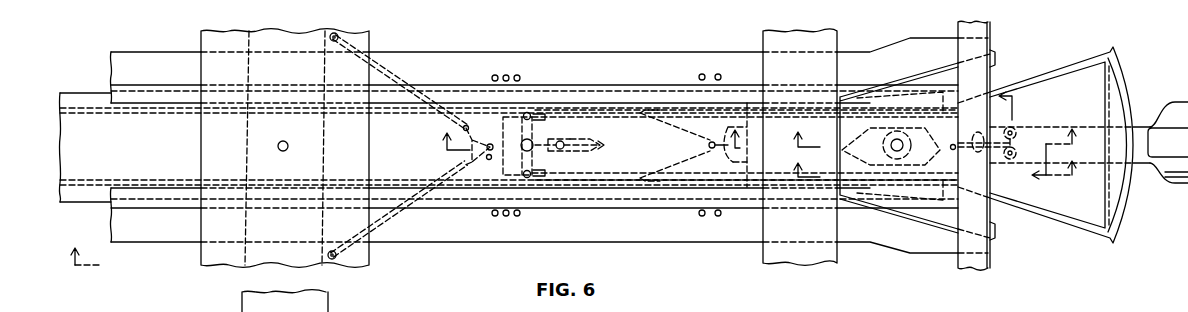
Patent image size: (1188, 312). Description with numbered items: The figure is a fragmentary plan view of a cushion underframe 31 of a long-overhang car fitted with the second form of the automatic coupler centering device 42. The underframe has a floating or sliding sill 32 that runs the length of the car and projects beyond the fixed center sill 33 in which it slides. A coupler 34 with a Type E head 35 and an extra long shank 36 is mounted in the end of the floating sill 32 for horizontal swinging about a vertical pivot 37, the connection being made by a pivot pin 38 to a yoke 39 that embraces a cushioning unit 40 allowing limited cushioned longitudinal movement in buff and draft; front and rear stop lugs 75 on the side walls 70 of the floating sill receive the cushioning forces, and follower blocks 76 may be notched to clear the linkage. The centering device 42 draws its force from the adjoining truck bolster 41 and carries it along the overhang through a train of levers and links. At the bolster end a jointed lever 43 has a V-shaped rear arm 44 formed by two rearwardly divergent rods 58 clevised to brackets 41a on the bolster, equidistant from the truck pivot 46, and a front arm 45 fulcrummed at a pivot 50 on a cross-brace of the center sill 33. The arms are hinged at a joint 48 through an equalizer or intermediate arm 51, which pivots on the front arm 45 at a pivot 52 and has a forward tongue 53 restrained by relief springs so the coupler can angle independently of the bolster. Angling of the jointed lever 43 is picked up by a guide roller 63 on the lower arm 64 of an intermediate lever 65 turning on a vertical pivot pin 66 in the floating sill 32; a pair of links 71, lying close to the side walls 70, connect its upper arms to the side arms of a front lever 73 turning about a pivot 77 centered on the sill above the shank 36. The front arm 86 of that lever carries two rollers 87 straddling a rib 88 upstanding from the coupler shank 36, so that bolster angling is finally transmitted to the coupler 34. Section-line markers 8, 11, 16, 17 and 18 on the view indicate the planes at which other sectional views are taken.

The section line 8 is at (78, 259).
The section line 11 is at (593, 143).
The section line 16 is at (938, 173).
The section line 17 is at (938, 142).
The section line 18 is at (1028, 137).
The cushion underframe 31 is at (570, 42).
The floating sill 32 is at (80, 93).
The fixed center sill 33 is at (158, 51).
The coupler 34 is at (1146, 118).
The Type E head 35 is at (1168, 100).
The shank 36 is at (1046, 126).
The vertical pivot 37 is at (889, 146).
The pivot pin 38 is at (903, 145).
The yoke 39 is at (891, 146).
The cushioning unit 40 is at (810, 114).
The truck bolster 41 is at (324, 147).
The brackets 41a is at (334, 42).
The centering device 42 is at (465, 160).
The jointed lever 43 is at (481, 133).
The rear arm 44 is at (455, 128).
The front arm 45 is at (684, 157).
The truck pivot 46 is at (278, 147).
The joint 48 is at (489, 159).
The pivot 50 is at (708, 146).
The intermediate arm 51 is at (605, 146).
The pivot 52 is at (560, 141).
The tongue 53 is at (584, 140).
The rods 58 is at (392, 58).
The guide roller 63 is at (563, 152).
The lower arm 64 is at (543, 122).
The intermediate lever 65 is at (523, 150).
The vertical pivot pin 66 is at (523, 120).
The side walls 70 is at (146, 113).
The links 71 is at (596, 171).
The front lever 73 is at (977, 132).
The stop lugs 75 is at (735, 172).
The follower blocks 76 is at (746, 110).
The pivot 77 is at (951, 149).
The front arm 86 is at (1008, 160).
The rollers 87 is at (1014, 129).
The rib 88 is at (1022, 144).